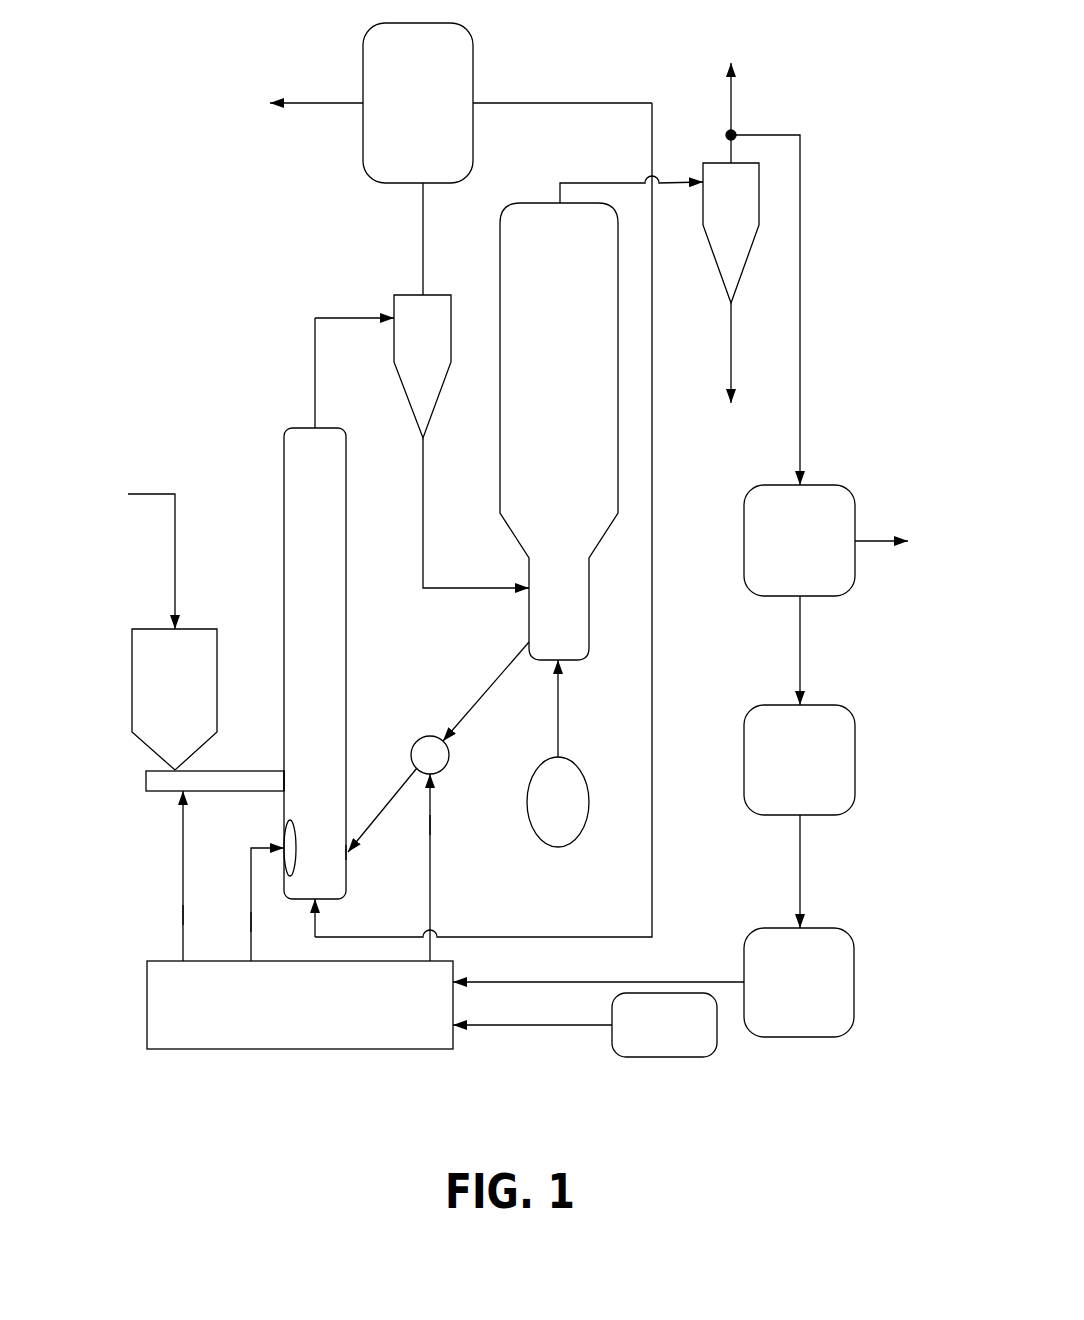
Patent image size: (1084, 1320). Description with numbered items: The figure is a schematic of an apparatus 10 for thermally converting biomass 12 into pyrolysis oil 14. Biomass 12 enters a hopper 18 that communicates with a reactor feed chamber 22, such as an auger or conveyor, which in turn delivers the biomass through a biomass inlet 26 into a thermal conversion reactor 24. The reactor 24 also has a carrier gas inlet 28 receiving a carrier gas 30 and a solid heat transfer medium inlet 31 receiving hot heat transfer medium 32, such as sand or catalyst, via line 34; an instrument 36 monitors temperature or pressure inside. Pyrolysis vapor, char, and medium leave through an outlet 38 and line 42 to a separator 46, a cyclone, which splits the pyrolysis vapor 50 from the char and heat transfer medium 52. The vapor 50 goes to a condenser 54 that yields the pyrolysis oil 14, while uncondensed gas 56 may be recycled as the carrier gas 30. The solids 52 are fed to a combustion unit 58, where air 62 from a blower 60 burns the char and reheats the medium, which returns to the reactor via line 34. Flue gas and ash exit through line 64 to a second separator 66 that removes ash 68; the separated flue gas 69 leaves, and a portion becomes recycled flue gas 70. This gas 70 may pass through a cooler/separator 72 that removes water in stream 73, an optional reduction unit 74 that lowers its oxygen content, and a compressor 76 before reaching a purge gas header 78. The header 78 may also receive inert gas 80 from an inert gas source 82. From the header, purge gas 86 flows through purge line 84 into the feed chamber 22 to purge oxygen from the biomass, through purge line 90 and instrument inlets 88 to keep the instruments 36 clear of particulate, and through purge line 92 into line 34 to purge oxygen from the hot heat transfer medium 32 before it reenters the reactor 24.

The apparatus 10 is at (142, 137).
The biomass 12 is at (173, 557).
The pyrolysis oil 14 is at (330, 100).
The hopper 18 is at (174, 699).
The reactor feed chamber 22 is at (145, 778).
The thermal conversion reactor 24 is at (315, 663).
The biomass inlet 26 is at (286, 785).
The carrier gas inlet 28 is at (320, 905).
The carrier gas 30 is at (565, 935).
The solid heat transfer medium inlet 31 is at (348, 860).
The heat transfer medium 32 is at (380, 812).
The line 34 is at (486, 690).
The instrument 36 is at (298, 846).
The outlet 38 is at (313, 425).
The line 42 is at (313, 325).
The separator 46 is at (422, 366).
The pyrolysis vapor 50 is at (421, 236).
The char and heat transfer medium 52 is at (425, 513).
The condenser 54 is at (418, 103).
The uncondensed gas 56 is at (565, 100).
The combustion unit 58 is at (559, 431).
The blower 60 is at (558, 802).
The air 62 is at (561, 706).
The line 64 is at (600, 181).
The separator 66 is at (731, 233).
The ash 68 is at (729, 352).
The separated flue gas 69 is at (729, 103).
The recycled flue gas 70 is at (766, 133).
The cooler/separator 72 is at (799, 540).
The stream 73 is at (875, 540).
The reduction unit 74 is at (799, 760).
The compressor 76 is at (799, 982).
The purge gas header 78 is at (300, 1005).
The inert gas 80 is at (533, 1028).
The inert gas source 82 is at (664, 1025).
The purge line 84 is at (181, 843).
The purge gas 86 is at (458, 823).
The instrument inlet 88 is at (284, 840).
The purge line 90 is at (250, 868).
The purge line 92 is at (432, 886).